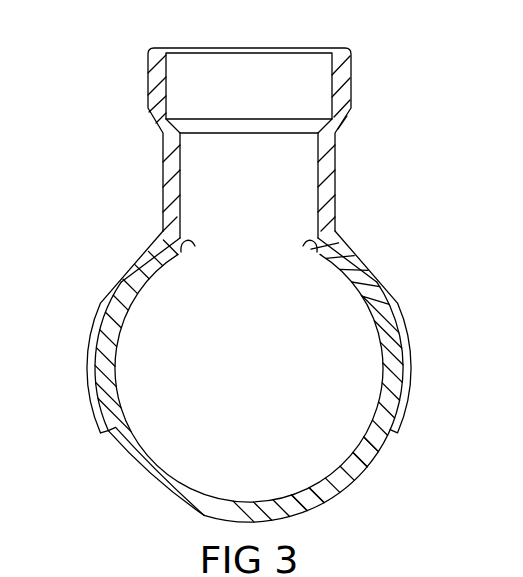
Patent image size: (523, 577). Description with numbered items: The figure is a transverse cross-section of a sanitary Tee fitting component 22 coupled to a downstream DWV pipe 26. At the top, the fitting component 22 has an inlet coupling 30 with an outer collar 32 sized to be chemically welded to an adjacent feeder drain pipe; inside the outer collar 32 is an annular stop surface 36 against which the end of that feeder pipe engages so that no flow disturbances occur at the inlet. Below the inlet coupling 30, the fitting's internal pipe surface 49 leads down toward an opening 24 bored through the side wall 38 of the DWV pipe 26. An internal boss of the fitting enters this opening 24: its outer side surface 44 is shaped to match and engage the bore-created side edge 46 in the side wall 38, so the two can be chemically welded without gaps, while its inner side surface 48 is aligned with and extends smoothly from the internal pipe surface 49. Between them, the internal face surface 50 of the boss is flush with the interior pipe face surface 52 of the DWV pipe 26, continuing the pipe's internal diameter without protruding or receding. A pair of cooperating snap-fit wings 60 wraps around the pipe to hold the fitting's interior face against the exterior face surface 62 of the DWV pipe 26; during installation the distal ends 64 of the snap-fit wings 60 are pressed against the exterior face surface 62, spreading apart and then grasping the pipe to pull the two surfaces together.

The sanitary Tee fitting component 22 is at (158, 186).
The opening 24 is at (102, 320).
The DWV pipe 26 is at (366, 486).
The inlet coupling 30 is at (334, 48).
The outer collar 32 is at (158, 79).
The annular stop surface 36 is at (290, 123).
The side wall 38 is at (376, 448).
The outer side surface 44 is at (360, 283).
The side edge 46 is at (347, 275).
The inner side surface 48 is at (190, 247).
The internal pipe surface 49 is at (181, 206).
The internal face surface 50 is at (163, 268).
The interior pipe face surface 52 is at (152, 462).
The snap-fit wings 60 is at (93, 345).
The exterior face surface 62 is at (185, 505).
The distal ends 64 is at (108, 437).